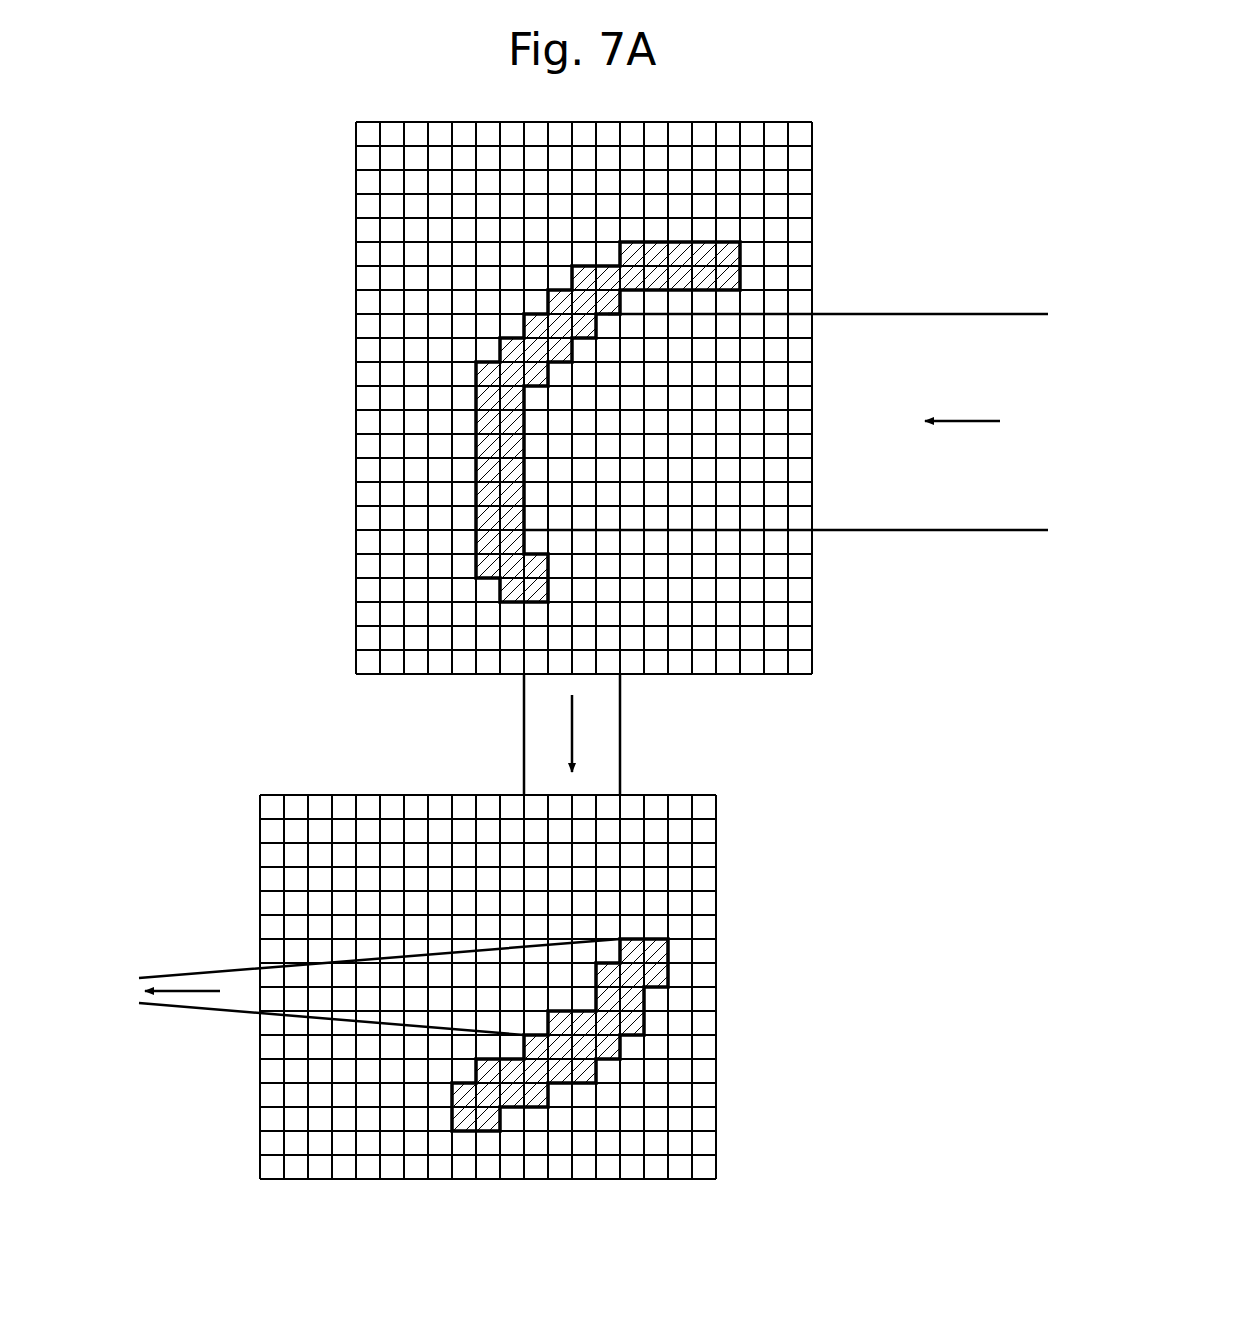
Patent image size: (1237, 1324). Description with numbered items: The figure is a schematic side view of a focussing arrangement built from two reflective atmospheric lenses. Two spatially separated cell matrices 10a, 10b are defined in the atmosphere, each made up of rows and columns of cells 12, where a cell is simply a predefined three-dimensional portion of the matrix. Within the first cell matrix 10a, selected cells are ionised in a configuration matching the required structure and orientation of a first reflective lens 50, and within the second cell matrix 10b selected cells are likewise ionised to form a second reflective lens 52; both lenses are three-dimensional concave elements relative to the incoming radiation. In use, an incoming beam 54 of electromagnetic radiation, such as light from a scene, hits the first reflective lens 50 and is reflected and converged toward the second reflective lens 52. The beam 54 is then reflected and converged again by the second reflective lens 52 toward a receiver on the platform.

The cell matrix 10a is at (356, 558).
The cell matrix 10b is at (716, 874).
The cell 12 is at (803, 588).
The first reflective lens 50 is at (735, 256).
The second reflective lens 52 is at (662, 946).
The incoming beam of electromagnetic radiation 54 is at (963, 313).